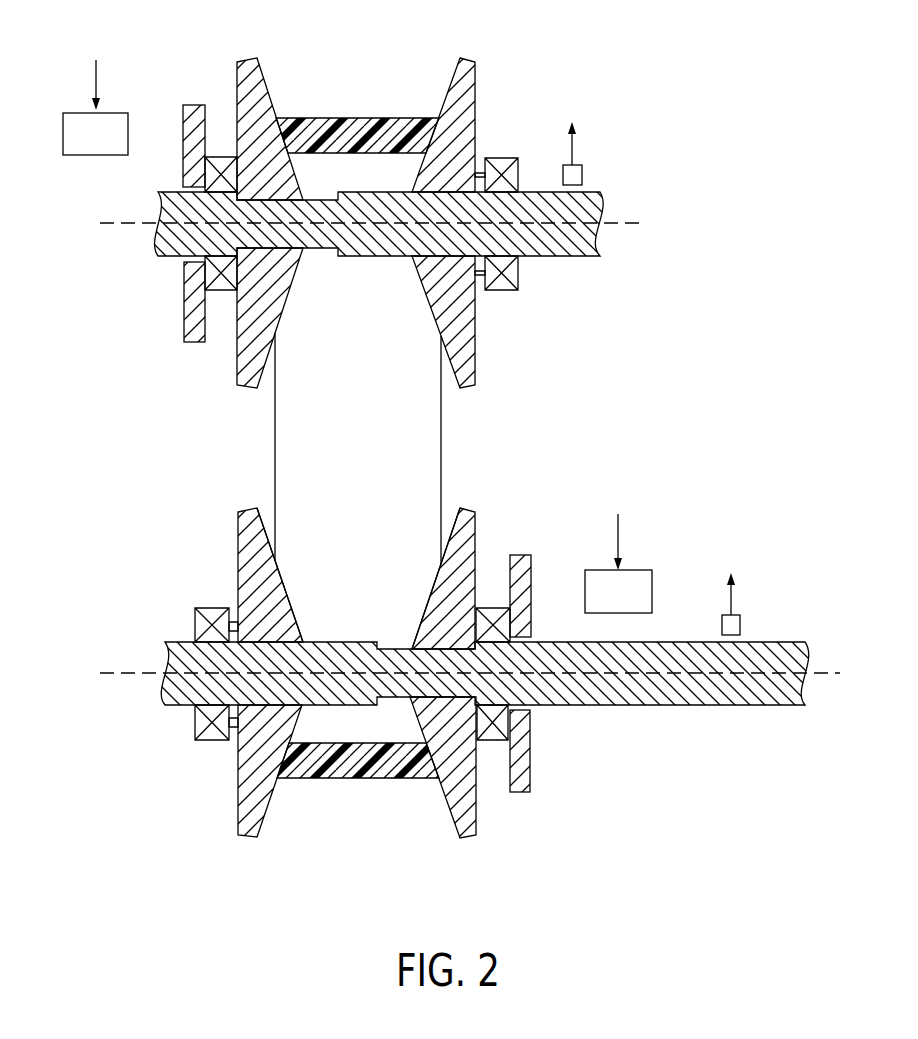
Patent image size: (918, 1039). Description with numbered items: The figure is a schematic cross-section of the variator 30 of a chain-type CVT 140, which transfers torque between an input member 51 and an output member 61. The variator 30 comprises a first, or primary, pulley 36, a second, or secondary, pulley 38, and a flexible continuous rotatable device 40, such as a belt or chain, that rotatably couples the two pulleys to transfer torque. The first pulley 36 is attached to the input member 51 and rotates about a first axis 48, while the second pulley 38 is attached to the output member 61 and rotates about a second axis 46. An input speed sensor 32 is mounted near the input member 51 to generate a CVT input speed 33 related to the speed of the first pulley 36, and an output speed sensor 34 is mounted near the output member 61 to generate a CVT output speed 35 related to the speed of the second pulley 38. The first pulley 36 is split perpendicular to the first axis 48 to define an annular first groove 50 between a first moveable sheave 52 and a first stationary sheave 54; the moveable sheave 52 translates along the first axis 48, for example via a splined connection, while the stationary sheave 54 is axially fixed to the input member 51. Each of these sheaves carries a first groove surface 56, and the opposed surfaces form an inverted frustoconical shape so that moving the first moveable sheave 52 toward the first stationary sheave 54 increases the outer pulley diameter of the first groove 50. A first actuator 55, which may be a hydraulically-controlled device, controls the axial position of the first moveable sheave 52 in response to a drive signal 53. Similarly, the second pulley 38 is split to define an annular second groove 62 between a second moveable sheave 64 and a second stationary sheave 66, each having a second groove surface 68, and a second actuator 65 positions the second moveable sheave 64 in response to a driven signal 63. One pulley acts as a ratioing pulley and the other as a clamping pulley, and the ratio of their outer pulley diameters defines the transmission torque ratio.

The CVT 140 is at (140, 852).
The variator 30 is at (220, 792).
The first pulley 36 is at (485, 116).
The second pulley 38 is at (488, 810).
The flexible continuous rotatable device 40 is at (443, 428).
The first axis 48 is at (128, 228).
The input member 51 is at (567, 258).
The second axis 46 is at (128, 680).
The output member 61 is at (590, 705).
The first moveable sheave 52 is at (243, 92).
The first stationary sheave 54 is at (470, 93).
The first groove surface 56 is at (285, 137).
The annular first groove 50 is at (402, 110).
The first actuator 55 is at (171, 135).
The drive signal 53 is at (96, 73).
The input speed sensor 32 is at (583, 175).
The CVT input speed 33 is at (557, 157).
The second stationary sheave 66 is at (238, 530).
The second moveable sheave 64 is at (477, 528).
The second groove surface 68 is at (265, 537).
The annular second groove 62 is at (351, 807).
The second actuator 65 is at (543, 592).
The driven signal 63 is at (607, 510).
The output speed sensor 34 is at (741, 625).
The CVT output speed 35 is at (715, 604).